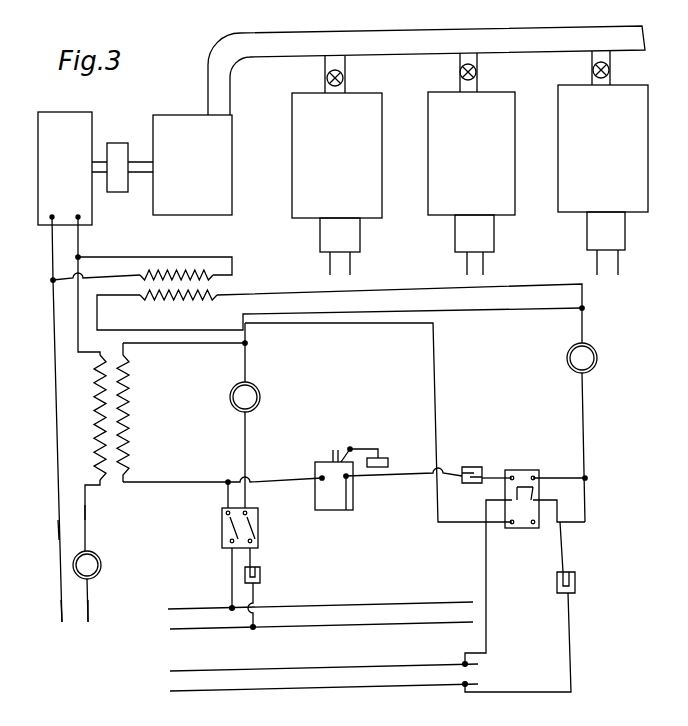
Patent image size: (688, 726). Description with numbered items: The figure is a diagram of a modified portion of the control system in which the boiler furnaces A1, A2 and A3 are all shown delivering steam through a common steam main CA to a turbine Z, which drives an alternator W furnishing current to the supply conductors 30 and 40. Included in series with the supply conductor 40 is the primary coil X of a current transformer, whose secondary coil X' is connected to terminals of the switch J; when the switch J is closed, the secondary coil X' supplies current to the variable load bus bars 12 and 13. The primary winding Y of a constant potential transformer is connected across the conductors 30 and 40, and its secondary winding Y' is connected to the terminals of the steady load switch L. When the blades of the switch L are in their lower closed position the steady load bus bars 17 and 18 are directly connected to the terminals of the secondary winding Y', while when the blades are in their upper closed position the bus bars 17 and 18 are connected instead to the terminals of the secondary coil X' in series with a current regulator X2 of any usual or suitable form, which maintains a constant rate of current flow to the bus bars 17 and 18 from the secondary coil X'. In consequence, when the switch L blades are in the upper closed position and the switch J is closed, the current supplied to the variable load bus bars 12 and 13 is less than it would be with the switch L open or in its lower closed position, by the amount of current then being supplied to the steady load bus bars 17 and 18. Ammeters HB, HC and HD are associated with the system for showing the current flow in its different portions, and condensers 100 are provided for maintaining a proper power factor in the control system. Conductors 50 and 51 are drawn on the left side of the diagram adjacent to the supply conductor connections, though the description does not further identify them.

The alternator W is at (65, 168).
The turbine Z is at (192, 165).
The common steam main CA is at (426, 60).
The boiler furnace A3 is at (337, 184).
The boiler furnace A2 is at (471, 183).
The boiler furnace A1 is at (603, 180).
The primary winding of constant potential transformer Y is at (146, 255).
The secondary winding of constant potential transformer Y' is at (340, 303).
The primary coil of current transformer X is at (65, 453).
The secondary coil of current transformer X' is at (181, 412).
The current regulator X2 is at (343, 510).
The ammeter HC is at (230, 401).
The ammeter HD is at (598, 357).
The ammeter HB is at (102, 566).
The switch J is at (222, 526).
The steady load switch L is at (523, 530).
The condenser 100 is at (262, 576).
The variable load bus bar 12 is at (215, 608).
The variable load bus bar 13 is at (188, 633).
The steady load bus bar 17 is at (365, 668).
The steady load bus bar 18 is at (345, 688).
The supply conductor 30 is at (62, 610).
The supply conductor 40 is at (90, 612).
The conductor 50 is at (60, 530).
The conductor 51 is at (87, 512).